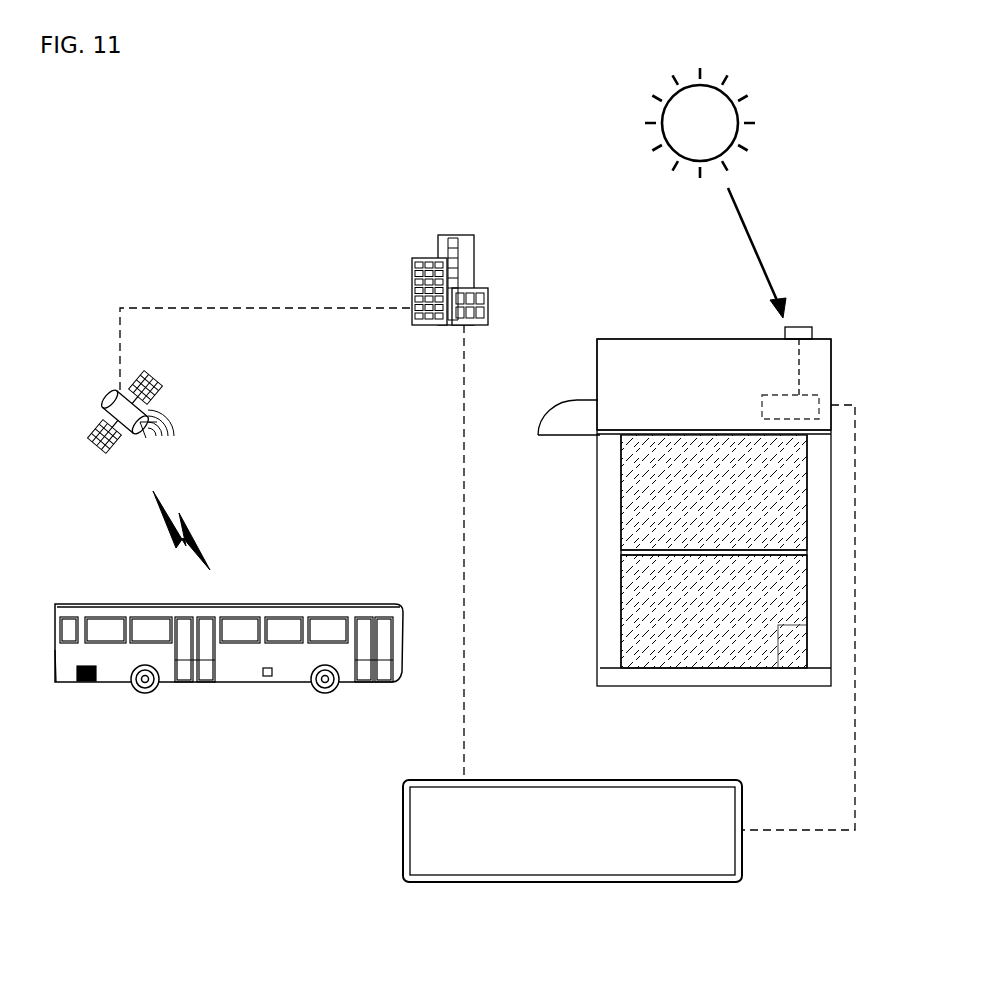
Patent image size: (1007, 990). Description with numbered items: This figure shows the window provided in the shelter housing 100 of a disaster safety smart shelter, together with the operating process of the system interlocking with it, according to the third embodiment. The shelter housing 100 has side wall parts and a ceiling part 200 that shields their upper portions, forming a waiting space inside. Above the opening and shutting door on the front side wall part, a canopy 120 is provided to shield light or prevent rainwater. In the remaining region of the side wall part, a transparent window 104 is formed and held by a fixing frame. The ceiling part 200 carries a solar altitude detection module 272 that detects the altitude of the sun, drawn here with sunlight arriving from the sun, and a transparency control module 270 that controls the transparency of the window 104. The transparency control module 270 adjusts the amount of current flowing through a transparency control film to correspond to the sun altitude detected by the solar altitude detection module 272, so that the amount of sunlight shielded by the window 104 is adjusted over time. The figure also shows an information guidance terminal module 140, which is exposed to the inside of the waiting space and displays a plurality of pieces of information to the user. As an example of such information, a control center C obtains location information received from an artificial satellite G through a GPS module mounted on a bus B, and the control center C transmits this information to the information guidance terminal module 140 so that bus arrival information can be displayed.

The shelter housing 100 is at (592, 579).
The window 104 is at (747, 527).
The canopy 120 is at (571, 406).
The information guidance terminal module 140 is at (568, 883).
The ceiling part 200 is at (622, 334).
The transparency control module 270 is at (762, 402).
The solar altitude detection module 272 is at (799, 327).
The bus B is at (235, 680).
The control center C is at (440, 235).
The artificial satellite G is at (112, 404).